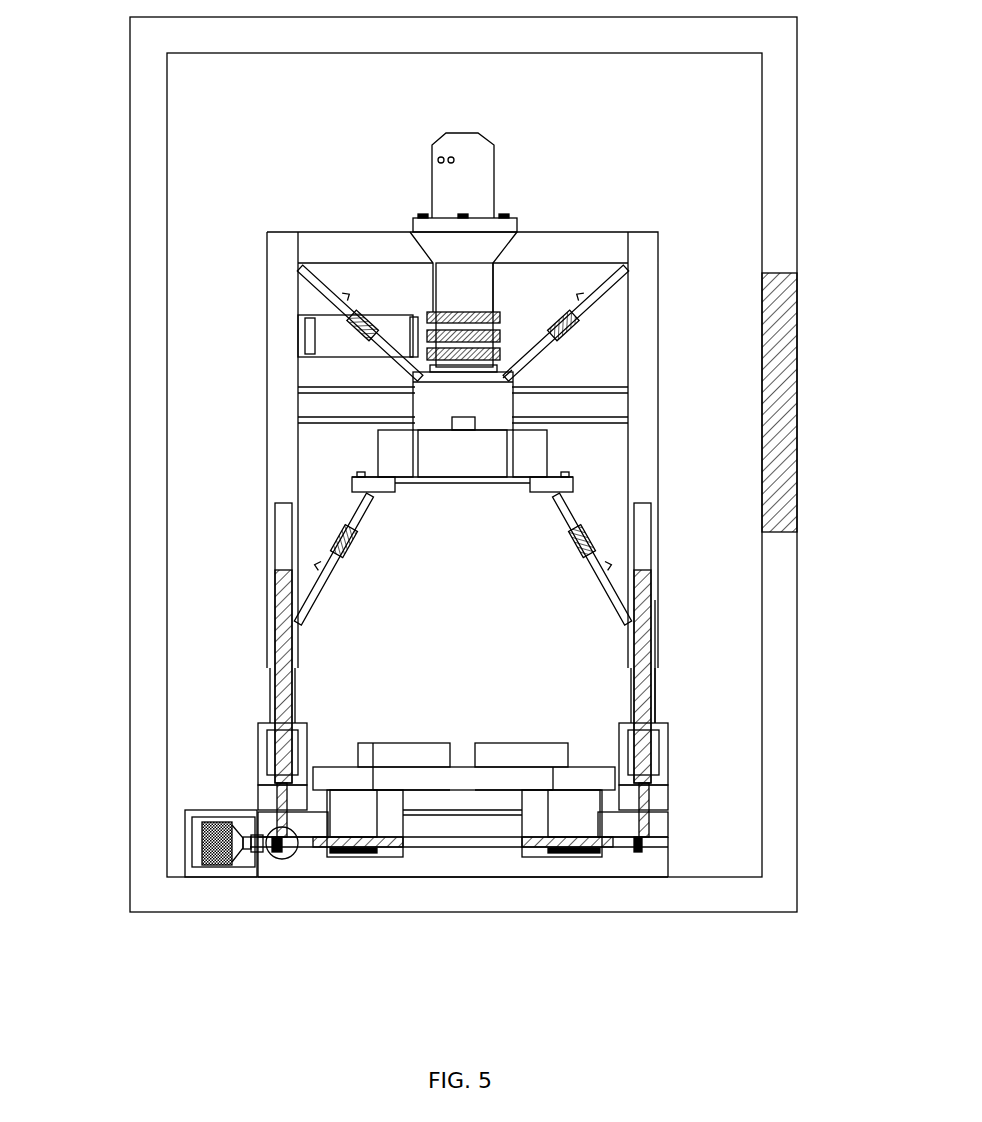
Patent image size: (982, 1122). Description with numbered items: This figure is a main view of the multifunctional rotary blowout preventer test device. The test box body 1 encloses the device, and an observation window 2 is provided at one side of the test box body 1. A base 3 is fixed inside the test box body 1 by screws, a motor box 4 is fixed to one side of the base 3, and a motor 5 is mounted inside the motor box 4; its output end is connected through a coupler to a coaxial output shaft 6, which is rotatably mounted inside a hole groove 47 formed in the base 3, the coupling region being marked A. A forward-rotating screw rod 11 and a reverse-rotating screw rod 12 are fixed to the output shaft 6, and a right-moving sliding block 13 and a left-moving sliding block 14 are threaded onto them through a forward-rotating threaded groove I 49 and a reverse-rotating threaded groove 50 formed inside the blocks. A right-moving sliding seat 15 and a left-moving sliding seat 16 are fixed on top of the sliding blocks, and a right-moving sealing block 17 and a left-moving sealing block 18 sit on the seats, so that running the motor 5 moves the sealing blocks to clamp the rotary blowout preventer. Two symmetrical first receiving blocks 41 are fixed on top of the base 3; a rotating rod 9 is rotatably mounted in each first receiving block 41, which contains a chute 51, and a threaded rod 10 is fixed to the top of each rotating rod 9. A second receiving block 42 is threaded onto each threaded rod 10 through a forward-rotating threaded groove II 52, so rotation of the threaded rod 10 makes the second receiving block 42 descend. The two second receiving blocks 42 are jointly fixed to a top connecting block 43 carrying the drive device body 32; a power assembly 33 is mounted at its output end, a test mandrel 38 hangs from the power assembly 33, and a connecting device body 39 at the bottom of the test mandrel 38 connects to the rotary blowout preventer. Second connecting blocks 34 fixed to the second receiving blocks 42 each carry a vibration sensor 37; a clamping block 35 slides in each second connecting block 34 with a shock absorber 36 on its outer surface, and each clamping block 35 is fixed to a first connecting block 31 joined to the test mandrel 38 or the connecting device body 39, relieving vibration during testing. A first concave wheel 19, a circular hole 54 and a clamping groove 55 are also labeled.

The test box body 1 is at (130, 325).
The observation window 2 is at (797, 437).
The base 3 is at (355, 868).
The motor box 4 is at (187, 872).
The motor 5 is at (200, 830).
The output shaft 6 is at (488, 845).
The rotating rod 9 is at (285, 805).
The threaded rod 10 is at (643, 703).
The forward-rotating screw rod 11 is at (393, 850).
The reverse-rotating screw rod 12 is at (540, 840).
The right-moving sliding block 13 is at (338, 797).
The left-moving sliding block 14 is at (600, 778).
The right-moving sliding seat 15 is at (410, 777).
The left-moving sliding seat 16 is at (533, 755).
The right-moving sealing block 17 is at (397, 745).
The left-moving sealing block 18 is at (492, 745).
The first concave wheel 19 is at (250, 837).
The first connecting block 31 is at (410, 374).
The drive device body 32 is at (493, 178).
The power assembly 33 is at (450, 290).
The second connecting block 34 is at (318, 296).
The clamping block 35 is at (560, 347).
The shock absorber 36 is at (360, 328).
The vibration sensor 37 is at (580, 295).
The test mandrel 38 is at (437, 410).
The connecting device body 39 is at (473, 463).
The first receiving block 41 is at (667, 777).
The second receiving block 42 is at (658, 637).
The top connecting block 43 is at (590, 232).
The hole groove 47 is at (452, 848).
The forward-rotating threaded groove I 49 is at (325, 852).
The reverse-rotating threaded groove 50 is at (607, 853).
The chute 51 is at (655, 745).
The forward-rotating threaded groove II 52 is at (648, 560).
The circular hole 54 is at (495, 260).
The clamping groove 55 is at (568, 333).
The coupling detail A is at (288, 860).